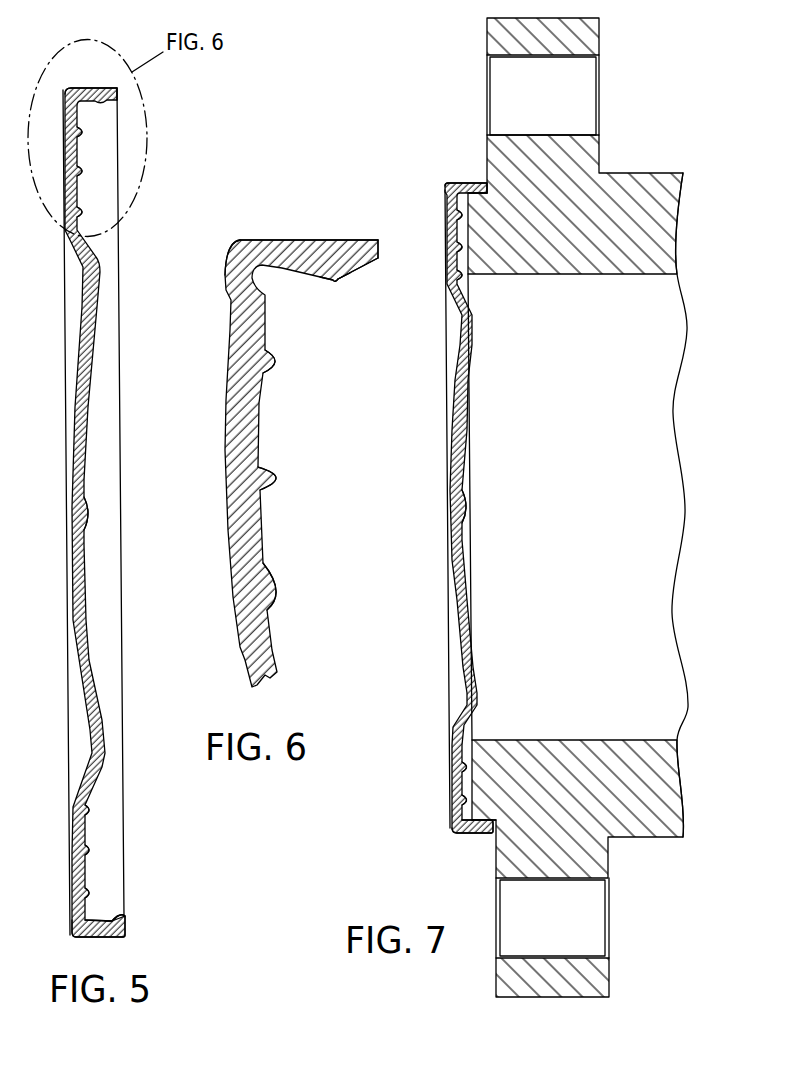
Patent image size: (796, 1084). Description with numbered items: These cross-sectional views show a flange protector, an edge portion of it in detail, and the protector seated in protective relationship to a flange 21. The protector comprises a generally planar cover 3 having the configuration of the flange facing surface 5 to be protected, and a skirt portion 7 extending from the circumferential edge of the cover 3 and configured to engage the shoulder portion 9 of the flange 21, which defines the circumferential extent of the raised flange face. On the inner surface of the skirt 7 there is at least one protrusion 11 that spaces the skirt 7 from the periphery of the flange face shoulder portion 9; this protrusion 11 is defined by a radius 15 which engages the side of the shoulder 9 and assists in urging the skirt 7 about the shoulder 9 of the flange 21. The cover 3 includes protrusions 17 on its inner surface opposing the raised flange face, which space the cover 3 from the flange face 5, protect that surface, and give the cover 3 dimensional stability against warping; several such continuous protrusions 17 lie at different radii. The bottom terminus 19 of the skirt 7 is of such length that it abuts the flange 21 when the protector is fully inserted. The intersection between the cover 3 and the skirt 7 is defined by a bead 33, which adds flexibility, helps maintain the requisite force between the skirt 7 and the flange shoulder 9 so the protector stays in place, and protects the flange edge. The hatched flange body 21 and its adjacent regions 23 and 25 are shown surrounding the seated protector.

In FIG. 6, the cover 3 is at (230, 428).
In FIG. 7, the flange facing surface 5 is at (468, 258).
In FIG. 5, the skirt portion 7 is at (87, 88).
In FIG. 6, the skirt portion 7 is at (290, 240).
In FIG. 7, the skirt portion 7 is at (472, 183).
In FIG. 7, the shoulder portion 9 is at (484, 200).
In FIG. 5, the protrusion 11 is at (115, 919).
In FIG. 6, the protrusion 11 is at (337, 284).
In FIG. 6, the radius 15 is at (334, 281).
In FIG. 5, the protrusion 17 is at (90, 896).
In FIG. 6, the protrusion 17 is at (278, 362).
In FIG. 7, the protrusion 17 is at (466, 739).
In FIG. 5, the bottom terminus 19 is at (127, 937).
In FIG. 6, the bottom terminus 19 is at (382, 246).
In FIG. 7, the flange 21 is at (507, 33).
In FIG. 7, the groove 23 is at (580, 93).
In FIG. 7, the hub 25 is at (670, 322).
In FIG. 6, the bead 33 is at (236, 240).